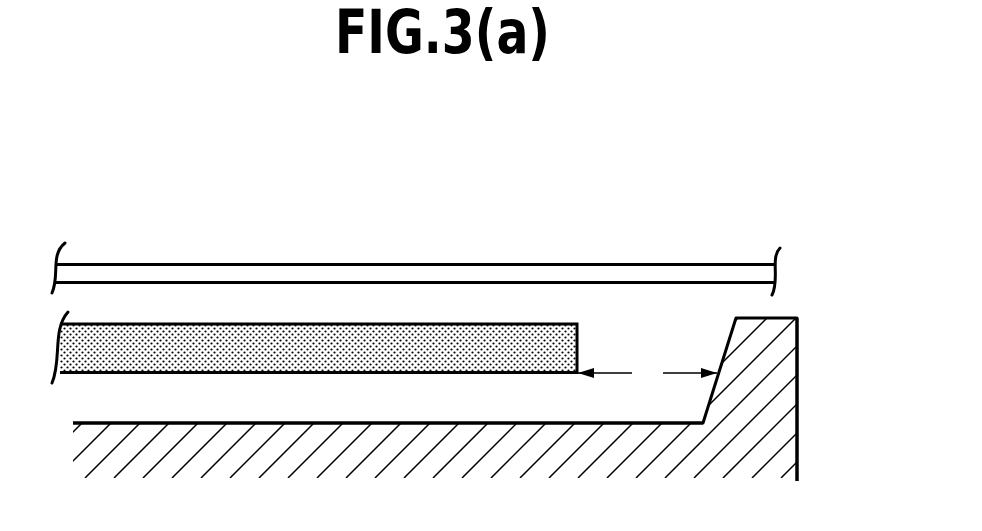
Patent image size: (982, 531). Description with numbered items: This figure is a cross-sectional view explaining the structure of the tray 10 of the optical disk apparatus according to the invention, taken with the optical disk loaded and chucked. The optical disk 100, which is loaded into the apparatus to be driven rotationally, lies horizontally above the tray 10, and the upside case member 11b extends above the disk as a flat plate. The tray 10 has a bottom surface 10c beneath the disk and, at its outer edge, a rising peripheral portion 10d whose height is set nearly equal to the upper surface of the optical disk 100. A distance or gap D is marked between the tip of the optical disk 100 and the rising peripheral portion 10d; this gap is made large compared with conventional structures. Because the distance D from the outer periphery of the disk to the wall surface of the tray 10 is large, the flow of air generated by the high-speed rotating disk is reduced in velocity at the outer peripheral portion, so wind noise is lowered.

The upside case member 11b is at (405, 264).
The optical disk 100 is at (430, 323).
The tray 10 is at (782, 316).
The bottom surface of housing 10c is at (390, 422).
The rising peripheral portion 10d is at (772, 398).
The distance D is at (647, 373).